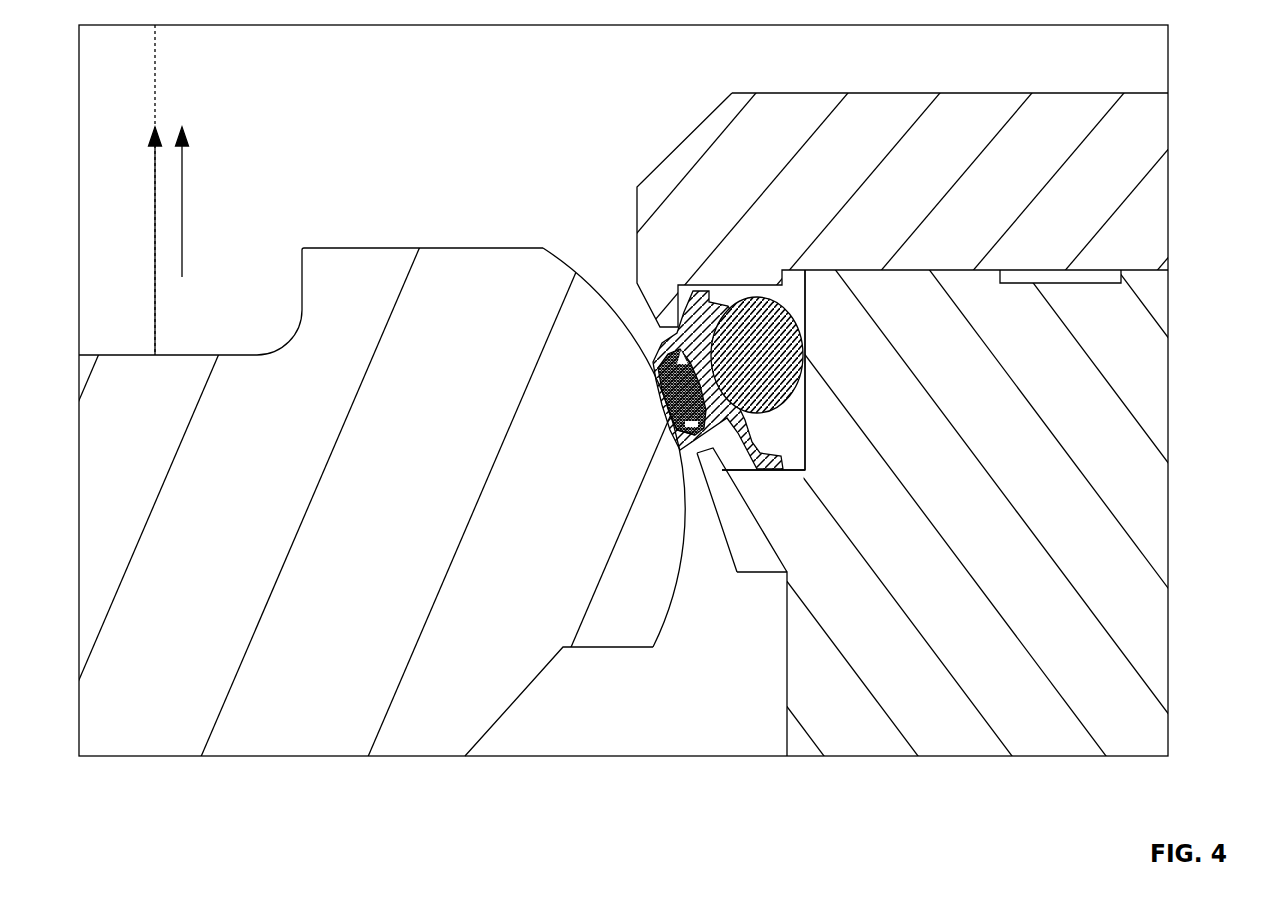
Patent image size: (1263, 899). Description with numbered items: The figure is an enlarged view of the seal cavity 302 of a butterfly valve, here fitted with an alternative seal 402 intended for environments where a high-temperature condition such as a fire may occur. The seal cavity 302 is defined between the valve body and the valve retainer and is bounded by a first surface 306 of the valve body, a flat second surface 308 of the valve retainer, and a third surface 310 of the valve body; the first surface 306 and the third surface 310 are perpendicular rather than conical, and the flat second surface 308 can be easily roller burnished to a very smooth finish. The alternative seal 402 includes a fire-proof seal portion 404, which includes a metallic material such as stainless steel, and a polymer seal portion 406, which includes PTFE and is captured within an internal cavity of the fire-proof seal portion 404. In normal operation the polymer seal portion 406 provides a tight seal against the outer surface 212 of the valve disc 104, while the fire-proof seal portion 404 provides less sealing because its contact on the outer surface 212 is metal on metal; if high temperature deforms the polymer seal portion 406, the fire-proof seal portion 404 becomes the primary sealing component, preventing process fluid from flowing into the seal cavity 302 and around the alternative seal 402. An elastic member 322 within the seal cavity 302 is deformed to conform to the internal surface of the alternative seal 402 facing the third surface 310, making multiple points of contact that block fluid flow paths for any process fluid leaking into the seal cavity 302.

The valve disc 104 is at (381, 490).
The outer surface 212 is at (679, 562).
The seal cavity 302 is at (854, 510).
The first surface 306 is at (752, 472).
The second surface 308 is at (757, 283).
The third surface 310 is at (806, 411).
The elastic member 322 is at (797, 303).
The alternative seal 402 is at (706, 367).
The fire-proof seal portion 404 is at (657, 379).
The polymer seal portion 406 is at (663, 412).